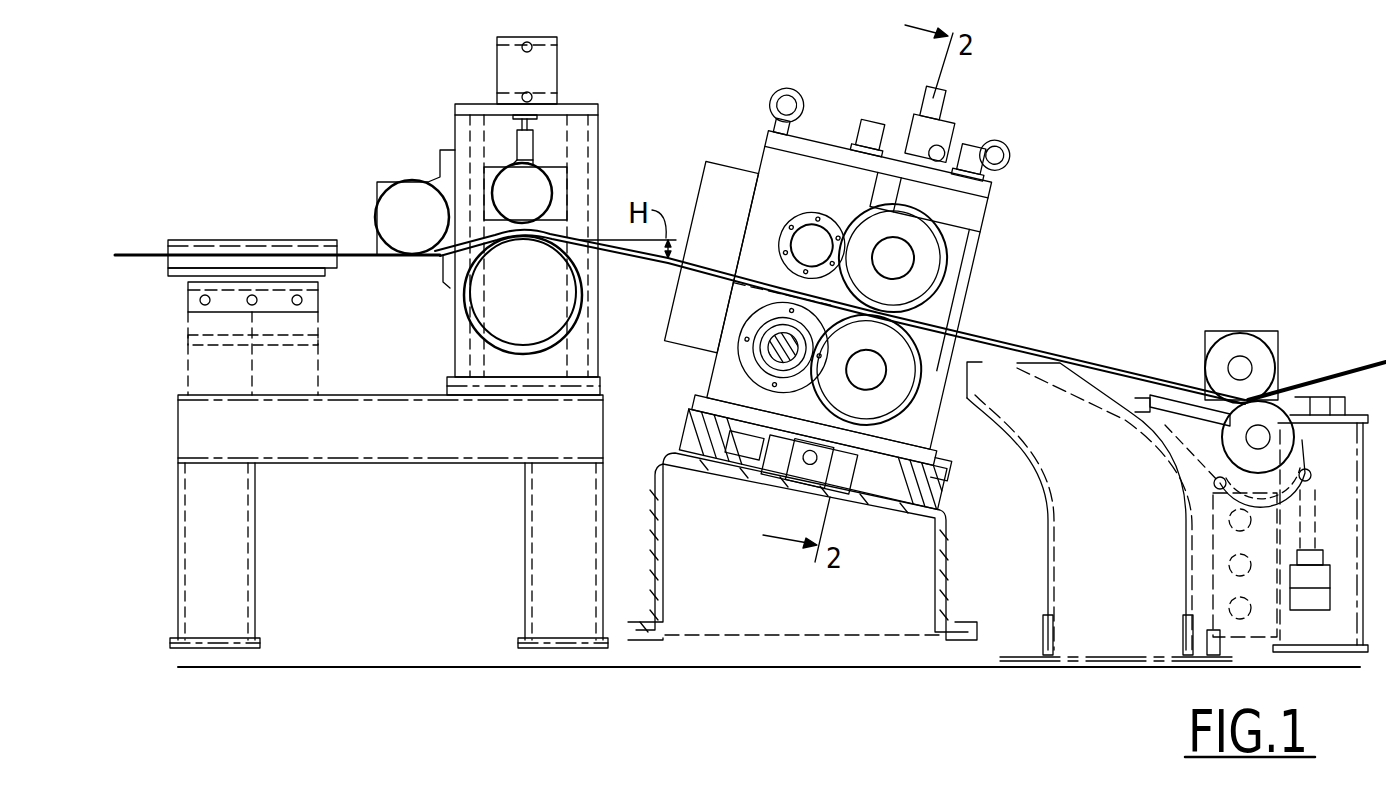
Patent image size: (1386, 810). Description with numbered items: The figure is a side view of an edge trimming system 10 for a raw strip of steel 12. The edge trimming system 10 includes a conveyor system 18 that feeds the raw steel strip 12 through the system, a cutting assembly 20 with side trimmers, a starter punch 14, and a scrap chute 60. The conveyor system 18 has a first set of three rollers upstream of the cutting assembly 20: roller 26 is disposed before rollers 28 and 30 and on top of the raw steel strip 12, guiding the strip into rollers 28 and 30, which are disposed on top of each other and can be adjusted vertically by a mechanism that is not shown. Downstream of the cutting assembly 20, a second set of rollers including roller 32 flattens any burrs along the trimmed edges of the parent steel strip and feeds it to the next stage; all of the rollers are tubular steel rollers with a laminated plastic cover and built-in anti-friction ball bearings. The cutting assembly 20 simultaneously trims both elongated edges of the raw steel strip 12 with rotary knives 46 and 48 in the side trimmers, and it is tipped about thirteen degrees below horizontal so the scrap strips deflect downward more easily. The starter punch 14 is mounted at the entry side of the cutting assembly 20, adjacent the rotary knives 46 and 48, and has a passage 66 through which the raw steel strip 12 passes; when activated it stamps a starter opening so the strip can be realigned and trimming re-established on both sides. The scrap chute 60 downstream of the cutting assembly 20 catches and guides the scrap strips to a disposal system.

The edge trimming system 10 is at (118, 337).
The raw strip of steel 12 is at (347, 257).
The starter punch 14 is at (732, 177).
The conveyor system 18 is at (470, 135).
The cutting assembly 20 is at (812, 198).
The roller 26 is at (402, 200).
The roller 28 is at (538, 190).
The roller 30 is at (540, 299).
The roller 32 is at (1262, 360).
The rotary knife 46 is at (905, 262).
The rotary knife 48 is at (893, 388).
The scrap chute 60 is at (1122, 538).
The passage 66 is at (717, 280).